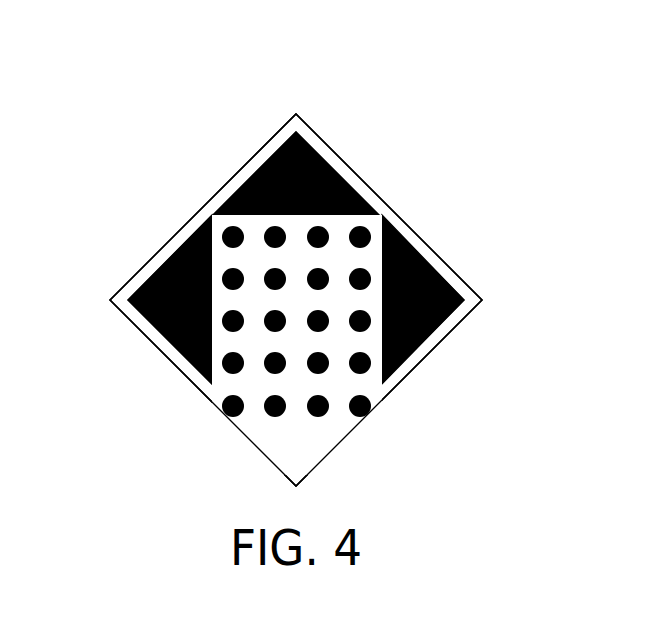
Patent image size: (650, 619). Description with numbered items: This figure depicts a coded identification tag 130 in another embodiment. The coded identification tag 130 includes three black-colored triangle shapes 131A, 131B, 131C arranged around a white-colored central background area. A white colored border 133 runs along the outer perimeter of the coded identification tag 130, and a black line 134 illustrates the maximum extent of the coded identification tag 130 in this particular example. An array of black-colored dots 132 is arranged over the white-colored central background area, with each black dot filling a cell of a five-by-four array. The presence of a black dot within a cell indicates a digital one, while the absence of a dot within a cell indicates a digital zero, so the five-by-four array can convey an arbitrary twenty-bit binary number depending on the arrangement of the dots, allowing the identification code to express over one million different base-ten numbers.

The coded identification tag 130 is at (84, 55).
The black-colored triangle shape 131A is at (309, 143).
The black-colored triangle shape 131B is at (165, 263).
The black-colored triangle shape 131C is at (420, 250).
The array of black-colored dots 132 is at (218, 422).
The white colored border 133 is at (450, 331).
The black line 134 is at (413, 368).